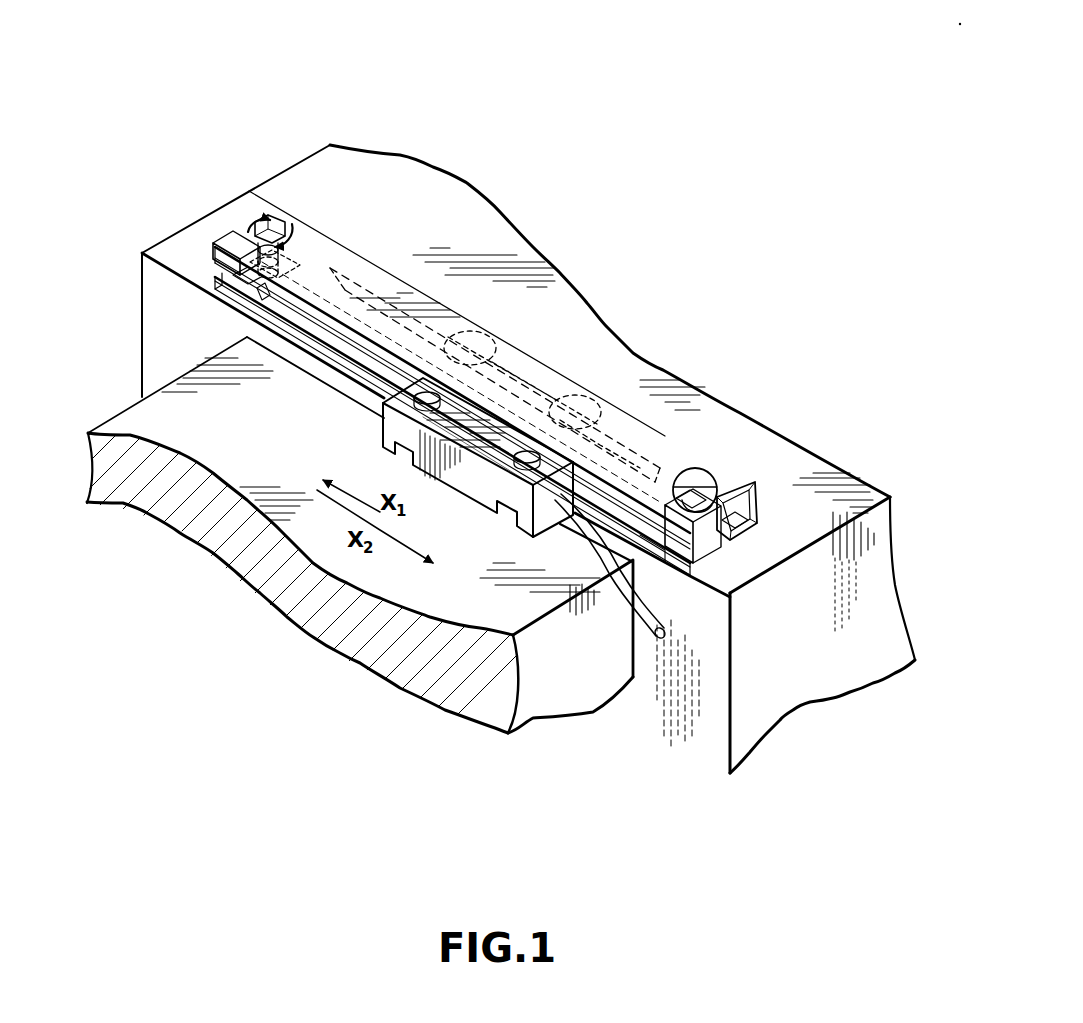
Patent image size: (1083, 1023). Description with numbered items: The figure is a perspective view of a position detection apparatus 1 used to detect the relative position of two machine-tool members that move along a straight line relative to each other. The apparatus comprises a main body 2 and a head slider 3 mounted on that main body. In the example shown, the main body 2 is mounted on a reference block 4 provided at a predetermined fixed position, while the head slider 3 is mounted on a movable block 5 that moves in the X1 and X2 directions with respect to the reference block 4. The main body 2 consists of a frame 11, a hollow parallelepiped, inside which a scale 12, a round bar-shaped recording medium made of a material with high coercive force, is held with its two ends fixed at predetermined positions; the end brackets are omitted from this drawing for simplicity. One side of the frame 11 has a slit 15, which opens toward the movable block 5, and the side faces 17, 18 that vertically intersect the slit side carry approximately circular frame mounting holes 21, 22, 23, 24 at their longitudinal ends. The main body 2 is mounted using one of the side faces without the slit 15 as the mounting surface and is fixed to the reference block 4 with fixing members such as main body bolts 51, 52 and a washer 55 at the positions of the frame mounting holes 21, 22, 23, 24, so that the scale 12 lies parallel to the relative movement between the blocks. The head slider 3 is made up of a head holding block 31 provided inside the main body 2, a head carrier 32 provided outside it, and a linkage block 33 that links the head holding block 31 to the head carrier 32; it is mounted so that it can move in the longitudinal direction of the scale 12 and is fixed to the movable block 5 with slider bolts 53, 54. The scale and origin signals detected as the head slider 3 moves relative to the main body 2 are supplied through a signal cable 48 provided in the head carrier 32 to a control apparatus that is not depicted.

The position detection apparatus 1 is at (468, 172).
The main body 2 is at (512, 332).
The head slider 3 is at (180, 530).
The reference block 4 is at (485, 233).
The movable block 5 is at (377, 432).
The frame 11 is at (388, 262).
The scale 12 is at (345, 272).
The slit 15 is at (313, 318).
The side face 17 is at (308, 248).
The side face 18 is at (753, 543).
The frame mounting hole 21 is at (699, 470).
The frame mounting hole 22 is at (290, 226).
The frame mounting hole 23 is at (733, 557).
The frame mounting hole 24 is at (262, 222).
The head holding block 31 is at (555, 372).
The head carrier 32 is at (487, 487).
The linkage block 33 is at (670, 580).
The signal cable 48 is at (613, 585).
The main body bolt 51 is at (742, 490).
The main body bolt 52 is at (250, 236).
The slider bolt 53 is at (535, 467).
The slider bolt 54 is at (383, 401).
The washer 55 is at (240, 278).